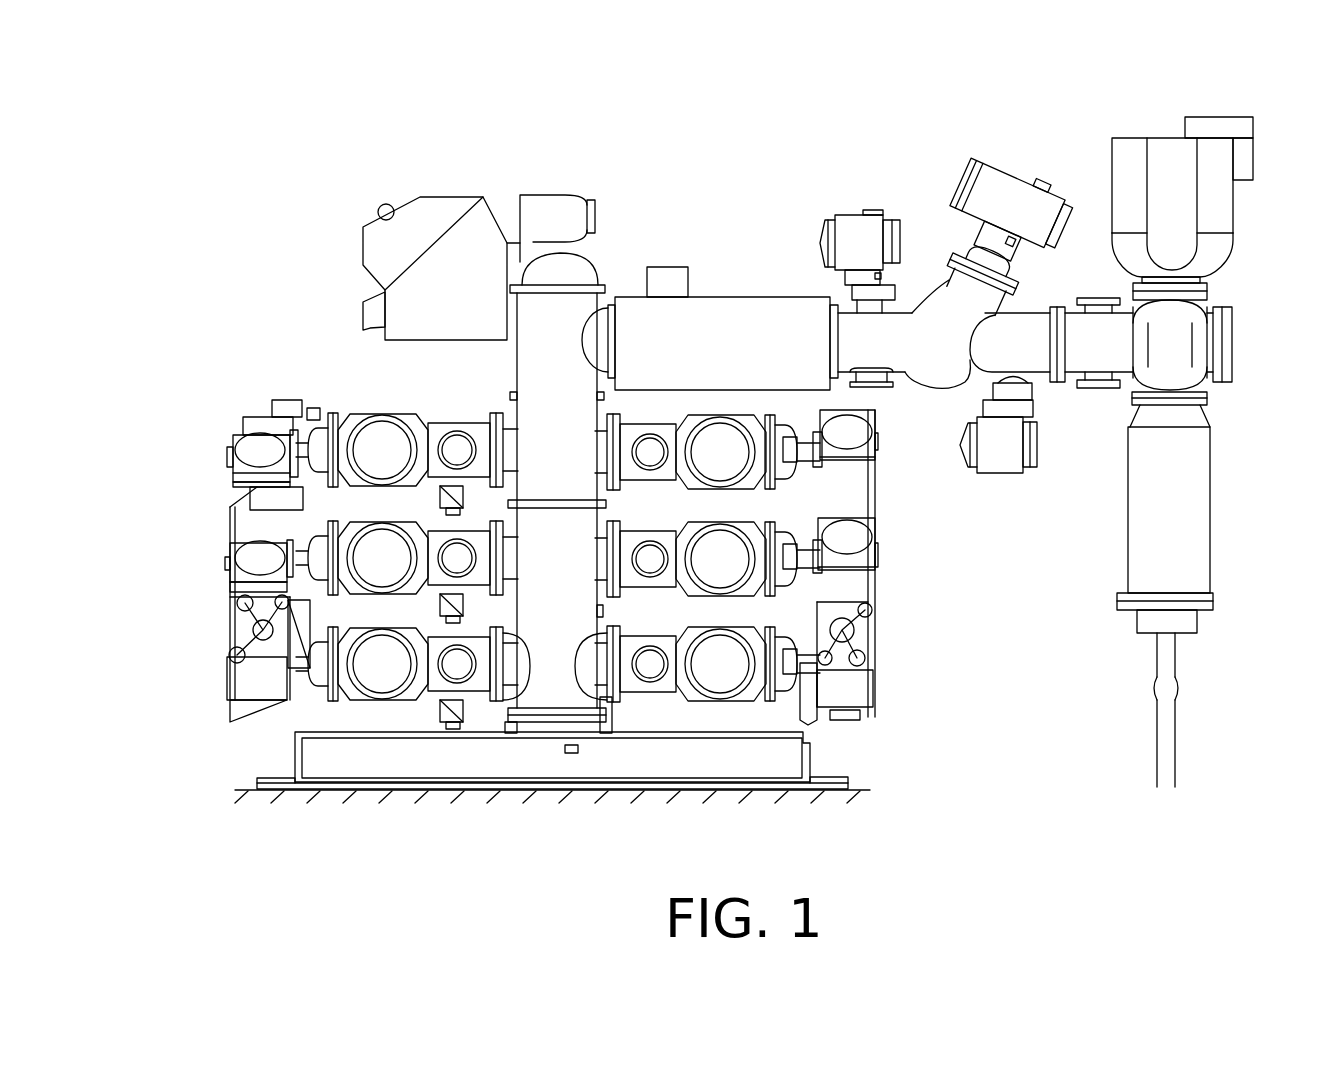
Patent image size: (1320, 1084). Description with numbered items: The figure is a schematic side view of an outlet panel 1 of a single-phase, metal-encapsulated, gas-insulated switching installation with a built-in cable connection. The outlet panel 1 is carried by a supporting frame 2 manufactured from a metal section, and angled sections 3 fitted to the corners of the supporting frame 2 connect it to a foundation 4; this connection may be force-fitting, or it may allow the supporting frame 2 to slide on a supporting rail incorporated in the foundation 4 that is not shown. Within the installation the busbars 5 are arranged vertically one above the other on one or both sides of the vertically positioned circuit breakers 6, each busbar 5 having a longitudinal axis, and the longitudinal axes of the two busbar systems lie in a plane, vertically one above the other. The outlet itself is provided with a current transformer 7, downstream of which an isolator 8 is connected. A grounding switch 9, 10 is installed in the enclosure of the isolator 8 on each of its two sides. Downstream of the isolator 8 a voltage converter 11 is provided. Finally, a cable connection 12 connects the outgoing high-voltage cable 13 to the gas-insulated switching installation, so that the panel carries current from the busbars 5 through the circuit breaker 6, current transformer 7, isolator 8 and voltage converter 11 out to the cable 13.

The outlet panel 1 is at (563, 166).
The supporting frame 2 is at (333, 760).
The angled sections 3 is at (293, 752).
The foundation 4 is at (550, 792).
The busbars 5 is at (385, 667).
The circuit breakers 6 is at (553, 372).
The current transformer 7 is at (735, 323).
The isolator 8 is at (937, 327).
The grounding switch 9 is at (858, 240).
The grounding switch 10 is at (998, 445).
The voltage converter 11 is at (1165, 165).
The cable connection 12 is at (1187, 490).
The high-voltage cable 13 is at (1170, 727).